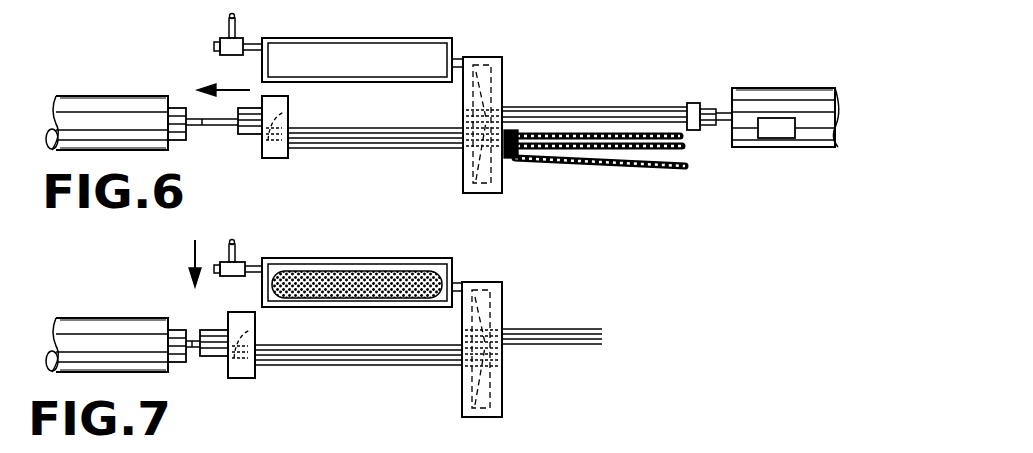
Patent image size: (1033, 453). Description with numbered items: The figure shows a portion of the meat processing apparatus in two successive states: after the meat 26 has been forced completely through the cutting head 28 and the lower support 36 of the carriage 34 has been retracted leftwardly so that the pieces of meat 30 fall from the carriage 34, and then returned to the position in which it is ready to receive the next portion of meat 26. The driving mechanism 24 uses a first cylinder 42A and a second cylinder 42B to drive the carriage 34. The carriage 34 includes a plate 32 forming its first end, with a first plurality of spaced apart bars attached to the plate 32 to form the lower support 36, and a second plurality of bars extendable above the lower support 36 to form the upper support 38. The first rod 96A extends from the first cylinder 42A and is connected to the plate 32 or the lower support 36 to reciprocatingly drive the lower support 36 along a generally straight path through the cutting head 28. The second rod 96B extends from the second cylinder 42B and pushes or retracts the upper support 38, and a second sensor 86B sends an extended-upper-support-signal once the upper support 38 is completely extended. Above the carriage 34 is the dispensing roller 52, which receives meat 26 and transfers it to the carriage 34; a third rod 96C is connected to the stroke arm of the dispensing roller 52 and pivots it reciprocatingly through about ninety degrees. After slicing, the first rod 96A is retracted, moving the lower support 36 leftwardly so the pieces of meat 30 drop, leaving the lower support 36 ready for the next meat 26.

In FIG. 6, the driving mechanism 24 is at (80, 106).
In FIG. 7, the driving mechanism 24 is at (80, 328).
In FIG. 7, the meat 26 is at (352, 280).
In FIG. 6, the cutting head 28 is at (490, 57).
In FIG. 7, the cutting head 28 is at (488, 282).
In FIG. 6, the pieces of meat 30 is at (572, 172).
In FIG. 6, the plate 32 is at (270, 158).
In FIG. 7, the plate 32 is at (240, 378).
In FIG. 6, the carriage 34 is at (340, 160).
In FIG. 7, the carriage 34 is at (290, 390).
In FIG. 6, the lower support 36 is at (420, 150).
In FIG. 7, the lower support 36 is at (395, 370).
In FIG. 6, the upper support 38 is at (605, 107).
In FIG. 7, the upper support 38 is at (575, 329).
In FIG. 6, the first cylinder 42A is at (130, 110).
In FIG. 7, the first cylinder 42A is at (136, 328).
In FIG. 6, the second cylinder 42B is at (805, 104).
In FIG. 6, the dispensing roller 52 is at (362, 38).
In FIG. 7, the dispensing roller 52 is at (380, 264).
In FIG. 6, the second sensor 86B is at (783, 140).
In FIG. 6, the first rod 96A is at (204, 118).
In FIG. 7, the first rod 96A is at (192, 340).
In FIG. 6, the second rod 96B is at (724, 108).
In FIG. 6, the third rod 96C is at (236, 32).
In FIG. 7, the third rod 96C is at (236, 252).